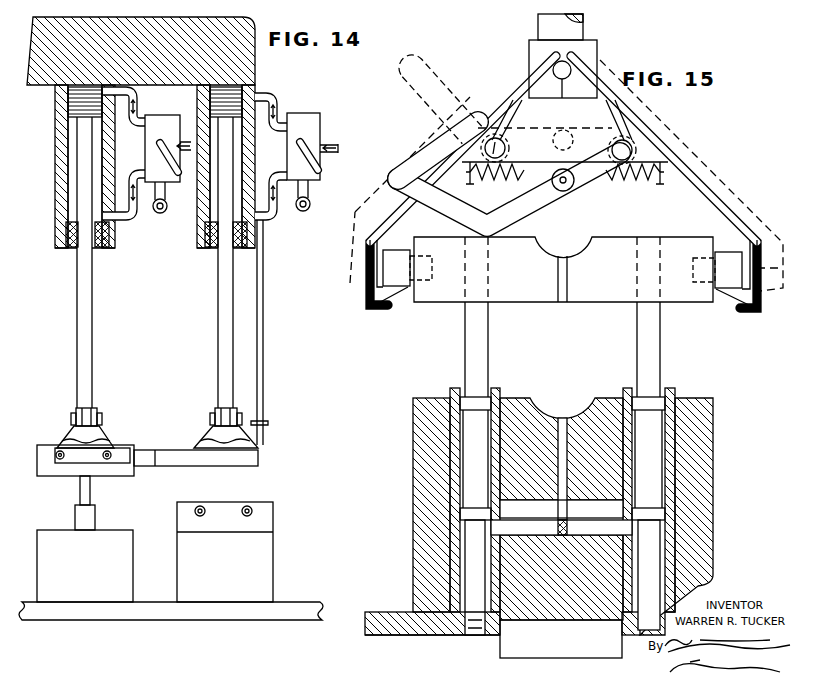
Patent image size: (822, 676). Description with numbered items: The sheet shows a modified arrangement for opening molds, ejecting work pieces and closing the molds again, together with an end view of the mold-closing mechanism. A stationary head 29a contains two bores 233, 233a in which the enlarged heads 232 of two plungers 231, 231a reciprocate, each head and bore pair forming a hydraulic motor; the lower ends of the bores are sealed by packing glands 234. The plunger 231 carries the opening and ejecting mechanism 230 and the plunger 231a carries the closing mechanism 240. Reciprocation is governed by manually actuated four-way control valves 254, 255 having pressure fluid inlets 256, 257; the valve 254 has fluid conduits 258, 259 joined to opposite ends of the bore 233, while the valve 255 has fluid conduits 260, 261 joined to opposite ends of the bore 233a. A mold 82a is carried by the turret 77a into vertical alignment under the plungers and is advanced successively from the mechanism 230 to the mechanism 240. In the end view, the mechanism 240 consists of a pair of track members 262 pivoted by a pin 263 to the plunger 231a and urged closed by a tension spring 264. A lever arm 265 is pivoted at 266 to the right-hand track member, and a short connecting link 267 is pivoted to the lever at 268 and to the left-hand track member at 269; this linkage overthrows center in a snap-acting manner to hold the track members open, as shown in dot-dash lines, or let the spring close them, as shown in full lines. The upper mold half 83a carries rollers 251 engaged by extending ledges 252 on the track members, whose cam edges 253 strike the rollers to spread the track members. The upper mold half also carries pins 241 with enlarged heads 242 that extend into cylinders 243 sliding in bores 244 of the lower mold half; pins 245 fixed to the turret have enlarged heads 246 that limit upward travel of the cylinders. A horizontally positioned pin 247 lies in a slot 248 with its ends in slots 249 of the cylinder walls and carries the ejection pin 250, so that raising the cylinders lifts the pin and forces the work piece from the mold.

In FIG. 14, the stationary head 29a is at (256, 50).
In FIG. 14, the enlarged heads 232 is at (72, 96).
In FIG. 14, the bore 233 is at (68, 156).
In FIG. 14, the bore 233a is at (236, 151).
In FIG. 14, the plunger 231 is at (90, 339).
In FIG. 14, the plunger 231a is at (221, 343).
In FIG. 15, the plunger 231a is at (586, 36).
In FIG. 14, the packing glands 234 is at (66, 255).
In FIG. 14, the fluid conduit 258 is at (135, 99).
In FIG. 14, the fluid conduit 259 is at (130, 219).
In FIG. 14, the fluid conduit 260 is at (272, 95).
In FIG. 14, the fluid conduit 261 is at (270, 219).
In FIG. 14, the 4-way control valve 254 is at (177, 116).
In FIG. 14, the 4-way control valve 255 is at (318, 112).
In FIG. 14, the pressure fluid inlet 256 is at (168, 184).
In FIG. 14, the pressure fluid inlet 257 is at (338, 153).
In FIG. 14, the mechanism 230 is at (100, 433).
In FIG. 14, the mechanism 240 is at (201, 438).
In FIG. 14, the mold 82a is at (133, 567).
In FIG. 14, the turret 77a is at (255, 620).
In FIG. 15, the turret 77a is at (398, 636).
In FIG. 15, the track members 262 is at (737, 219).
In FIG. 15, the pin 263 is at (563, 69).
In FIG. 15, the lever arm 265 is at (532, 208).
In FIG. 15, the pivot 266 is at (573, 150).
In FIG. 15, the connecting link 267 is at (518, 158).
In FIG. 15, the pivot 268 is at (570, 190).
In FIG. 15, the pivot 269 is at (476, 125).
In FIG. 15, the tension spring 264 is at (628, 185).
In FIG. 15, the upper mold half 83a is at (625, 240).
In FIG. 15, the rollers 251 is at (395, 252).
In FIG. 15, the extending ledges 252 is at (372, 306).
In FIG. 15, the cam edges 253 is at (392, 305).
In FIG. 15, the pins 241 is at (466, 348).
In FIG. 15, the cylinders 243 is at (501, 394).
In FIG. 15, the enlarged heads 242 is at (476, 408).
In FIG. 15, the slots 249 is at (496, 447).
In FIG. 15, the enlarged heads 246 is at (475, 507).
In FIG. 15, the pins 245 is at (470, 580).
In FIG. 15, the bores 244 is at (462, 553).
In FIG. 15, the slot 248 is at (619, 512).
In FIG. 15, the ejection pin 250 is at (557, 507).
In FIG. 15, the horizontally positioned pin 247 is at (621, 526).